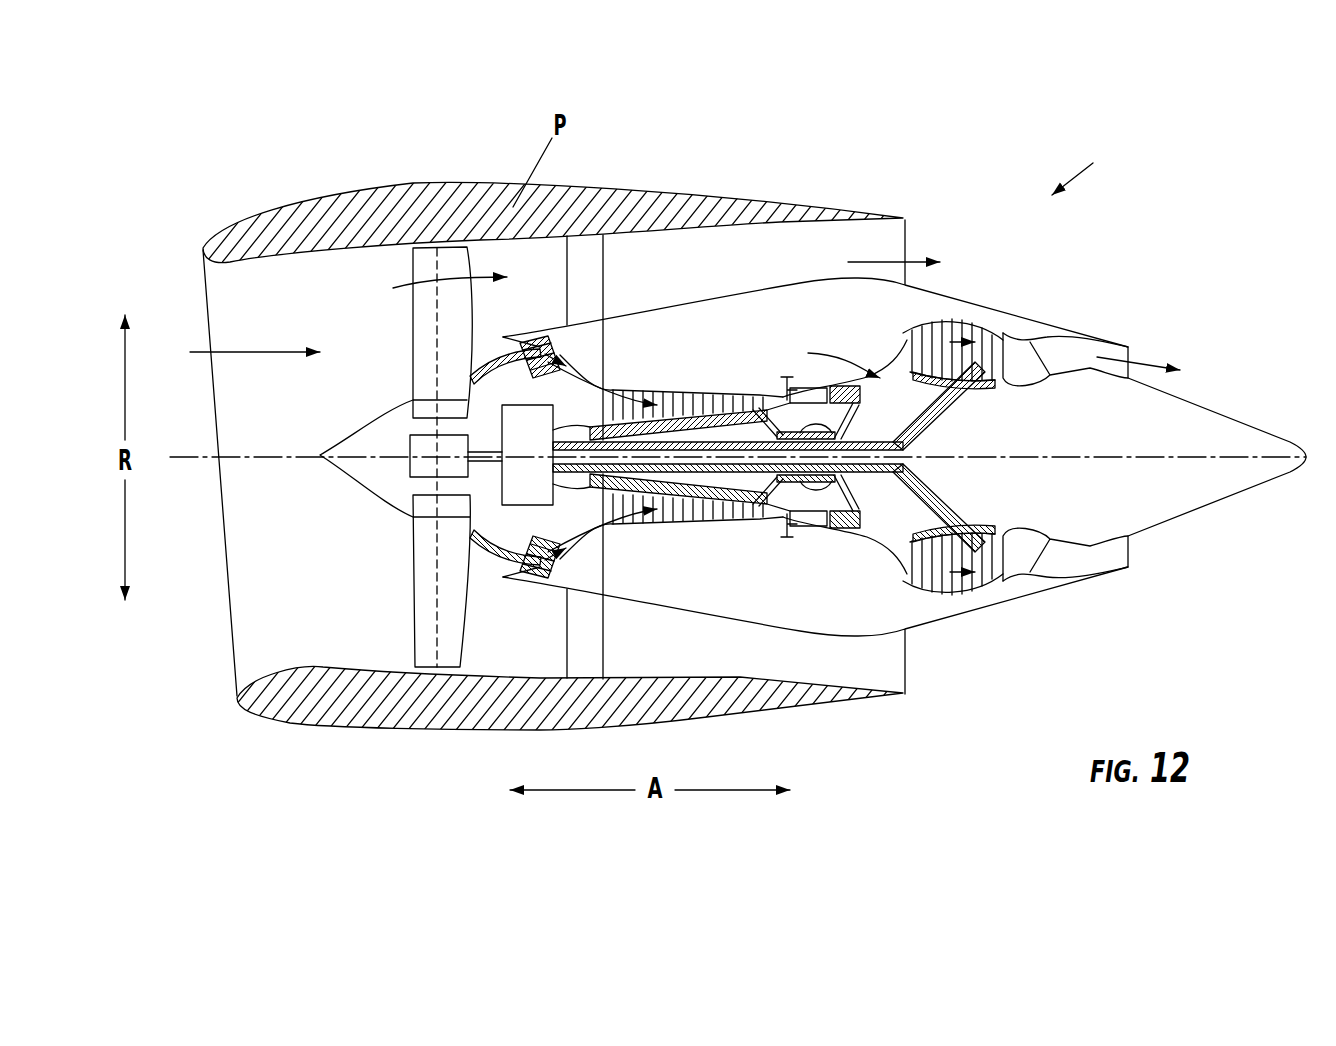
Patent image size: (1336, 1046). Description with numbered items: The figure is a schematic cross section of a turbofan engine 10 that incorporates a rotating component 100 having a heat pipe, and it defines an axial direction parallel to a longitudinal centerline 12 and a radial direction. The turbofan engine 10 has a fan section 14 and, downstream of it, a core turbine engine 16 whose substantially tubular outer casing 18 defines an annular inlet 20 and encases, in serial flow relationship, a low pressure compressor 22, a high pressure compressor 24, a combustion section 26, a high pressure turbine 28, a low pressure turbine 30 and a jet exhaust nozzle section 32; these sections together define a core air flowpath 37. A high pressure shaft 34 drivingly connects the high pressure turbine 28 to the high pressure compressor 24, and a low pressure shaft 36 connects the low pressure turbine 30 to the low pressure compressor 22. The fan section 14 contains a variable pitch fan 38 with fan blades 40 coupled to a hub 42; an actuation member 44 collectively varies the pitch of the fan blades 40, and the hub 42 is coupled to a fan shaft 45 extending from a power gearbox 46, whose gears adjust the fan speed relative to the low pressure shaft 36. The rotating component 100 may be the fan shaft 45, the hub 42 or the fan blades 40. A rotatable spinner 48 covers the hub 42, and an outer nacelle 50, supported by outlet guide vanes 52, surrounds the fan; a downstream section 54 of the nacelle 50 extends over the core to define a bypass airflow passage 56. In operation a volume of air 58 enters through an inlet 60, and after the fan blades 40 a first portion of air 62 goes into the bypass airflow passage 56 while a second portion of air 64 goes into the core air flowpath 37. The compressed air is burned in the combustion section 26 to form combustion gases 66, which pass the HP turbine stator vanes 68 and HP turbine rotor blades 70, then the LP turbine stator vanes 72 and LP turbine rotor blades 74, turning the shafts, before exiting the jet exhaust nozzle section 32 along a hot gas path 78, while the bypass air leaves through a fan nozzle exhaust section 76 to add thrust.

The turbofan engine 10 is at (1087, 168).
The longitudinal centerline 12 is at (1072, 456).
The fan section 14 is at (372, 268).
The core turbine engine 16 is at (707, 340).
The outer casing 18 is at (760, 620).
The annular inlet 20 is at (505, 570).
The low pressure compressor 22 is at (570, 520).
The high pressure compressor 24 is at (633, 517).
The combustion section 26 is at (807, 517).
The high pressure turbine 28 is at (930, 515).
The low pressure turbine 30 is at (987, 580).
The jet exhaust nozzle section 32 is at (1047, 567).
The high pressure shaft 34 is at (848, 403).
The low pressure shaft 36 is at (950, 410).
The core air flowpath 37 is at (595, 515).
The variable pitch fan 38 is at (378, 506).
The fan blades 40 is at (413, 605).
The hub 42 is at (428, 410).
The actuation member 44 is at (410, 410).
The fan shaft 45 is at (493, 440).
The power gearbox 46 is at (560, 420).
The spinner 48 is at (333, 473).
The outer nacelle 50 is at (460, 730).
The outlet guide vanes 52 is at (603, 263).
The downstream section of the nacelle 54 is at (850, 213).
The bypass airflow passage 56 is at (752, 277).
The volume of air 58 is at (243, 345).
The inlet 60 is at (233, 667).
The first portion of air 62 is at (430, 285).
The second portion of air 64 is at (495, 340).
The combustion gases 66 is at (977, 275).
The HP turbine stator vanes 68 is at (822, 527).
The HP turbine rotor blades 70 is at (907, 487).
The LP turbine stator vanes 72 is at (917, 567).
The LP turbine rotor blades 74 is at (923, 577).
The fan nozzle exhaust section 76 is at (893, 243).
The hot gas path 78 is at (883, 360).
The rotating component 100 is at (898, 378).